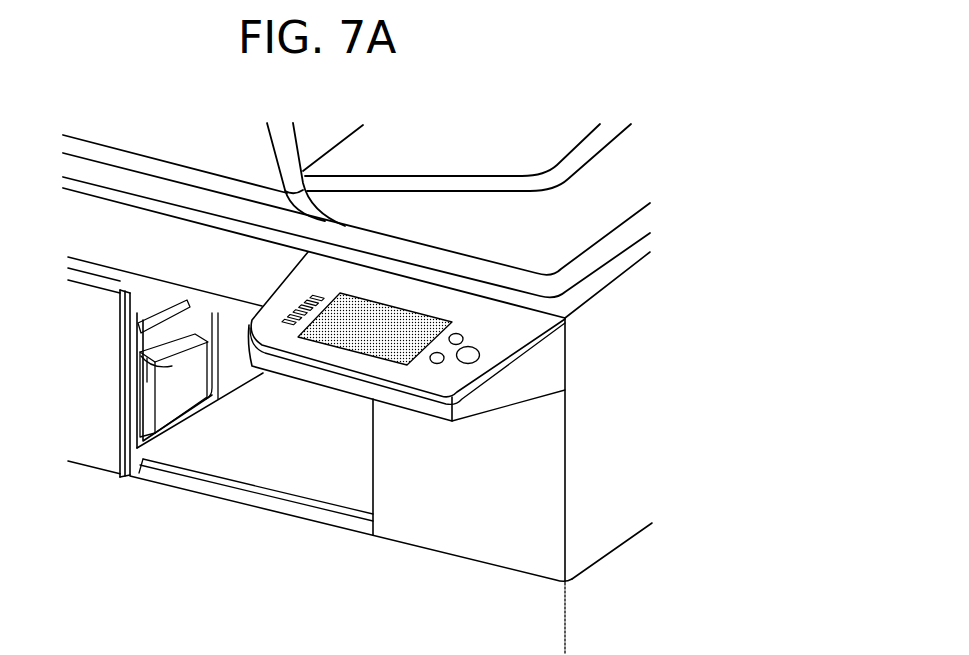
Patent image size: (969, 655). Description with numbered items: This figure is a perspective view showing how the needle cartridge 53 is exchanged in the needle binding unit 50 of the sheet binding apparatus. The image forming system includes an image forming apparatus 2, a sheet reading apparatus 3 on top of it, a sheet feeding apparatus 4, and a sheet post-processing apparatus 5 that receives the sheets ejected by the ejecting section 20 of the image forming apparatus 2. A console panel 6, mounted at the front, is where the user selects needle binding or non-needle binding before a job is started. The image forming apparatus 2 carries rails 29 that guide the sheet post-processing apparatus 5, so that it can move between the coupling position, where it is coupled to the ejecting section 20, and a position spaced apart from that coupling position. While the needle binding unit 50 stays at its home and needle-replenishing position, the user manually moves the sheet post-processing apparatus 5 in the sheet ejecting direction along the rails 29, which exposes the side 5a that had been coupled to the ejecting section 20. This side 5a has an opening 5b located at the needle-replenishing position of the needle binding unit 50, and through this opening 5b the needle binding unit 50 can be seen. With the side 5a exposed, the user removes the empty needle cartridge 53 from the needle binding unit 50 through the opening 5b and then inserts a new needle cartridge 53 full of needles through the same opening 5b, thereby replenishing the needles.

The image forming apparatus 2 is at (580, 622).
The sheet reading apparatus 3 is at (598, 345).
The sheet feeding apparatus 4 is at (612, 208).
The sheet post-processing apparatus 5 is at (95, 452).
The side 5a is at (243, 380).
The opening 5b is at (215, 391).
The console panel 6 is at (400, 315).
The ejecting section 20 is at (605, 545).
The rails 29 is at (277, 493).
The needle binding unit 50 is at (148, 403).
The needle cartridge 53 is at (194, 342).